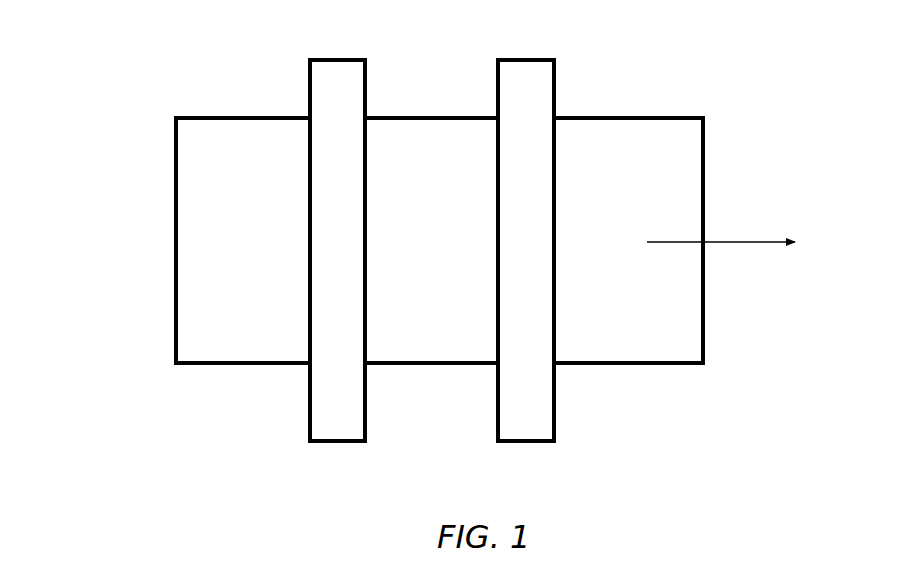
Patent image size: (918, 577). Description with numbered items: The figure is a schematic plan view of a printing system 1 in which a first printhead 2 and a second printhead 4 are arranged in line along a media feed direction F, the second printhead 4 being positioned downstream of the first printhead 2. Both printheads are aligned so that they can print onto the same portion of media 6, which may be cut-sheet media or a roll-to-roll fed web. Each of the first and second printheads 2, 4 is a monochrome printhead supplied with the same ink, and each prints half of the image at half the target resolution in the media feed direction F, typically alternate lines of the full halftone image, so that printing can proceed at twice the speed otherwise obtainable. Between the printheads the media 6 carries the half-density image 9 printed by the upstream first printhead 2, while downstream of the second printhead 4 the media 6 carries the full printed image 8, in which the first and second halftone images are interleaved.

The printing system 1 is at (122, 82).
The first printhead 2 is at (328, 419).
The second printhead 4 is at (540, 420).
The media 6 is at (198, 310).
The full printed image 8 is at (585, 145).
The half-density image 9 is at (393, 148).
The media feed direction F is at (731, 243).